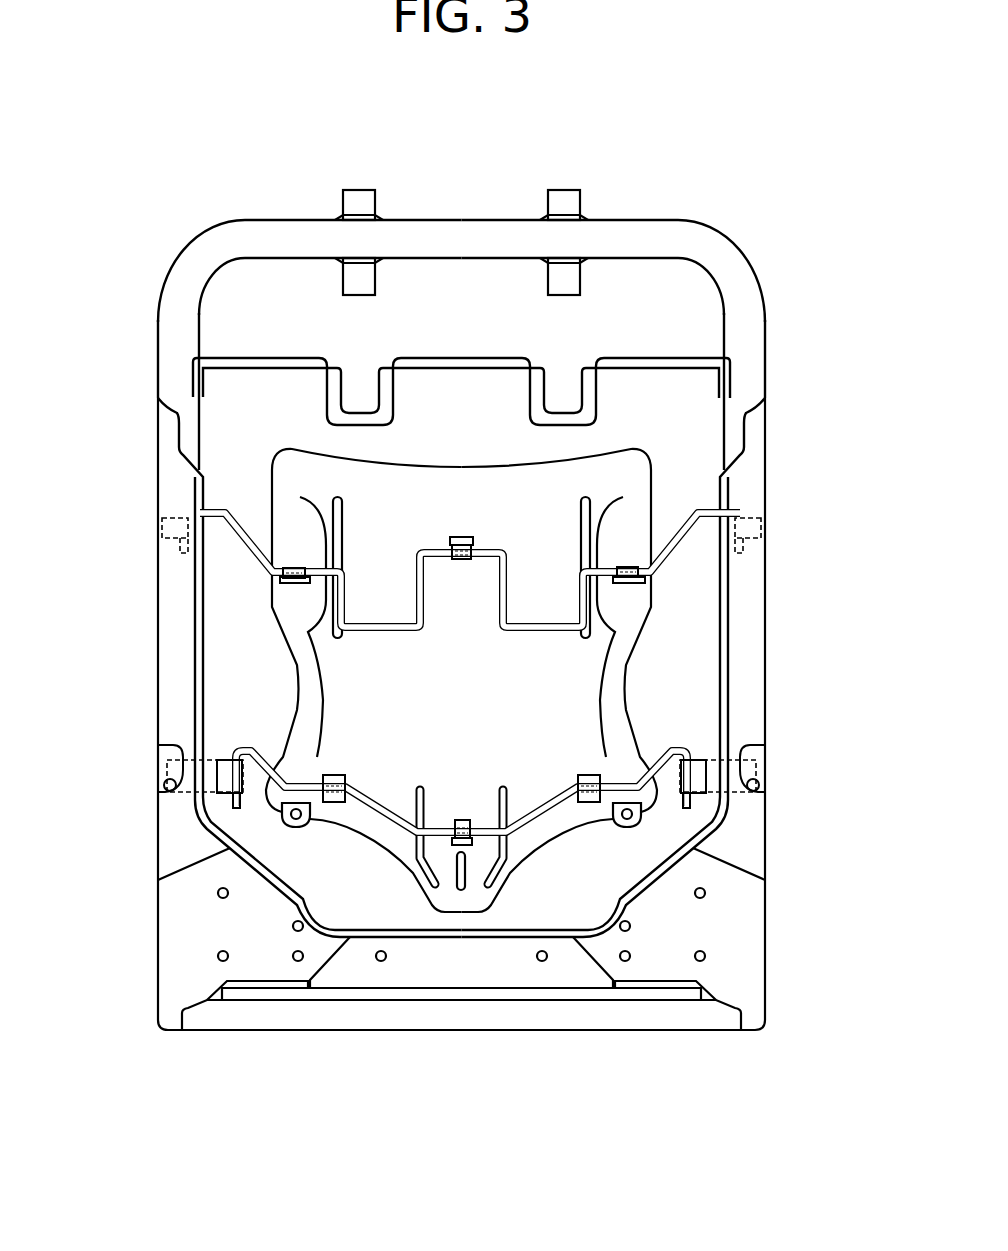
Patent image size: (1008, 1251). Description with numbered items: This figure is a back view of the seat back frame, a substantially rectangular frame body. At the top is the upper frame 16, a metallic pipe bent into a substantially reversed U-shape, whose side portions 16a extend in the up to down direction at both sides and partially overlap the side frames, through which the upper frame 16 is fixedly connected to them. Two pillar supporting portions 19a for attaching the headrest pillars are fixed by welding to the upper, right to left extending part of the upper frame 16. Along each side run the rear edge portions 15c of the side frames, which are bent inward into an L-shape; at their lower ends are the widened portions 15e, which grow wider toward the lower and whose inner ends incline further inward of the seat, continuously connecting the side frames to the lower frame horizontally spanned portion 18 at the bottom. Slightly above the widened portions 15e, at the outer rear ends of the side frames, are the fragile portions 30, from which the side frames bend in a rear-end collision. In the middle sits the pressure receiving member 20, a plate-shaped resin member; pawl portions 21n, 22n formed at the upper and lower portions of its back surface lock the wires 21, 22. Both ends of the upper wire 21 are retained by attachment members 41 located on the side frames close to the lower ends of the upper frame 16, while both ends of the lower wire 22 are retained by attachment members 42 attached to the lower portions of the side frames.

The rear edge portion 15c is at (182, 612).
The widened portion 15e is at (740, 937).
The upper frame 16 is at (643, 233).
The side portion 16a is at (747, 335).
The lower frame horizontally spanned portion 18 is at (417, 973).
The pillar supporting portion 19a is at (360, 190).
The pressure receiving member 20 is at (497, 497).
The wire 21 is at (677, 520).
The pawl portion 21n is at (462, 535).
The wire 22 is at (673, 748).
The pawl portion 22n is at (593, 805).
The fragile portion 30 is at (160, 777).
The attachment member 41 is at (150, 528).
The attachment member 42 is at (180, 750).